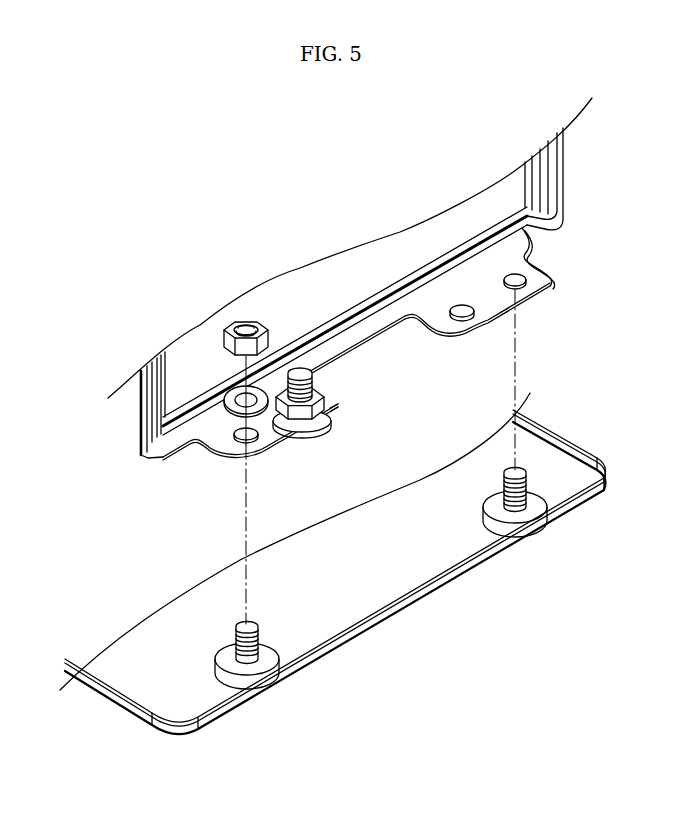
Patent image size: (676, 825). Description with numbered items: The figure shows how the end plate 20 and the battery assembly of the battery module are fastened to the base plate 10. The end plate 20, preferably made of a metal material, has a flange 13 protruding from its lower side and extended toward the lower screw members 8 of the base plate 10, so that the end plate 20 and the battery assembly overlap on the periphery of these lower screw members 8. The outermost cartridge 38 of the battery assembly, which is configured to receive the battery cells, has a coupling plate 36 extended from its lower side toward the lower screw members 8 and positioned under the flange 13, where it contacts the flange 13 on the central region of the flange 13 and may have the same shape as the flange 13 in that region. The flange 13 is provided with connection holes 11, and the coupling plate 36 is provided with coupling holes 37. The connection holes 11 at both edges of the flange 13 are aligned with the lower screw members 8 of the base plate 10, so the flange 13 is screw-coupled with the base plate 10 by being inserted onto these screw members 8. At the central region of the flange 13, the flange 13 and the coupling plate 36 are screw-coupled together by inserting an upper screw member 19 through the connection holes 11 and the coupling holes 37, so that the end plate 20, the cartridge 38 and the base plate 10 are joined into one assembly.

The lower screw member 8 is at (226, 398).
The base plate 10 is at (443, 590).
The connection hole 11 is at (255, 439).
The flange 13 is at (330, 352).
The upper screw member 19 is at (321, 413).
The end plate 20 is at (294, 292).
The coupling plate 36 is at (380, 340).
The coupling hole 37 is at (463, 318).
The cartridge 38 is at (398, 250).